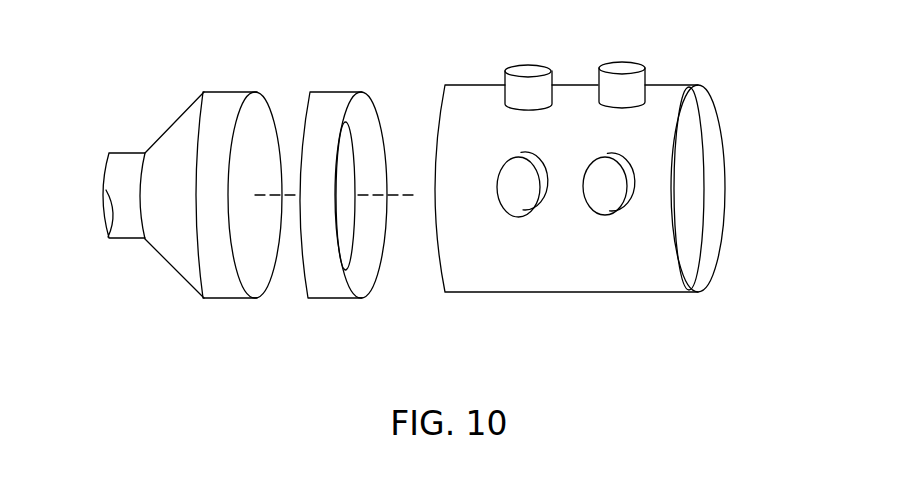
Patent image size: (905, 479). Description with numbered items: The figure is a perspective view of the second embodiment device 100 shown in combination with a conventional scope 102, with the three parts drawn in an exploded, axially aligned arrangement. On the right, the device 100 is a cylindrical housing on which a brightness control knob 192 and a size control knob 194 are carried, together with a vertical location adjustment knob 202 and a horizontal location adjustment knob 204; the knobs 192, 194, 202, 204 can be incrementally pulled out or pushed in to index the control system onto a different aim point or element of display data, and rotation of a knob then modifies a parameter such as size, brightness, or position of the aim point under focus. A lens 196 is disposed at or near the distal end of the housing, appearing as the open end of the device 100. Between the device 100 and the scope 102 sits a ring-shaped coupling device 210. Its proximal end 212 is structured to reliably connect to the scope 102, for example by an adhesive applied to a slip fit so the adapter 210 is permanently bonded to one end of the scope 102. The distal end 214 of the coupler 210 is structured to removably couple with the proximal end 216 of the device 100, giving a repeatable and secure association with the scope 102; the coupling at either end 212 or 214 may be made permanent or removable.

The device 100 is at (602, 154).
The scope 102 is at (225, 102).
The brightness control knob 192 is at (622, 68).
The size control knob 194 is at (607, 202).
The lens 196 is at (687, 230).
The vertical location adjustment control knob 202 is at (528, 72).
The horizontal location adjustment control knob 204 is at (520, 200).
The coupling device 210 is at (337, 68).
The proximal end 212 is at (293, 311).
The distal end 214 is at (388, 303).
The proximal end 216 is at (460, 61).